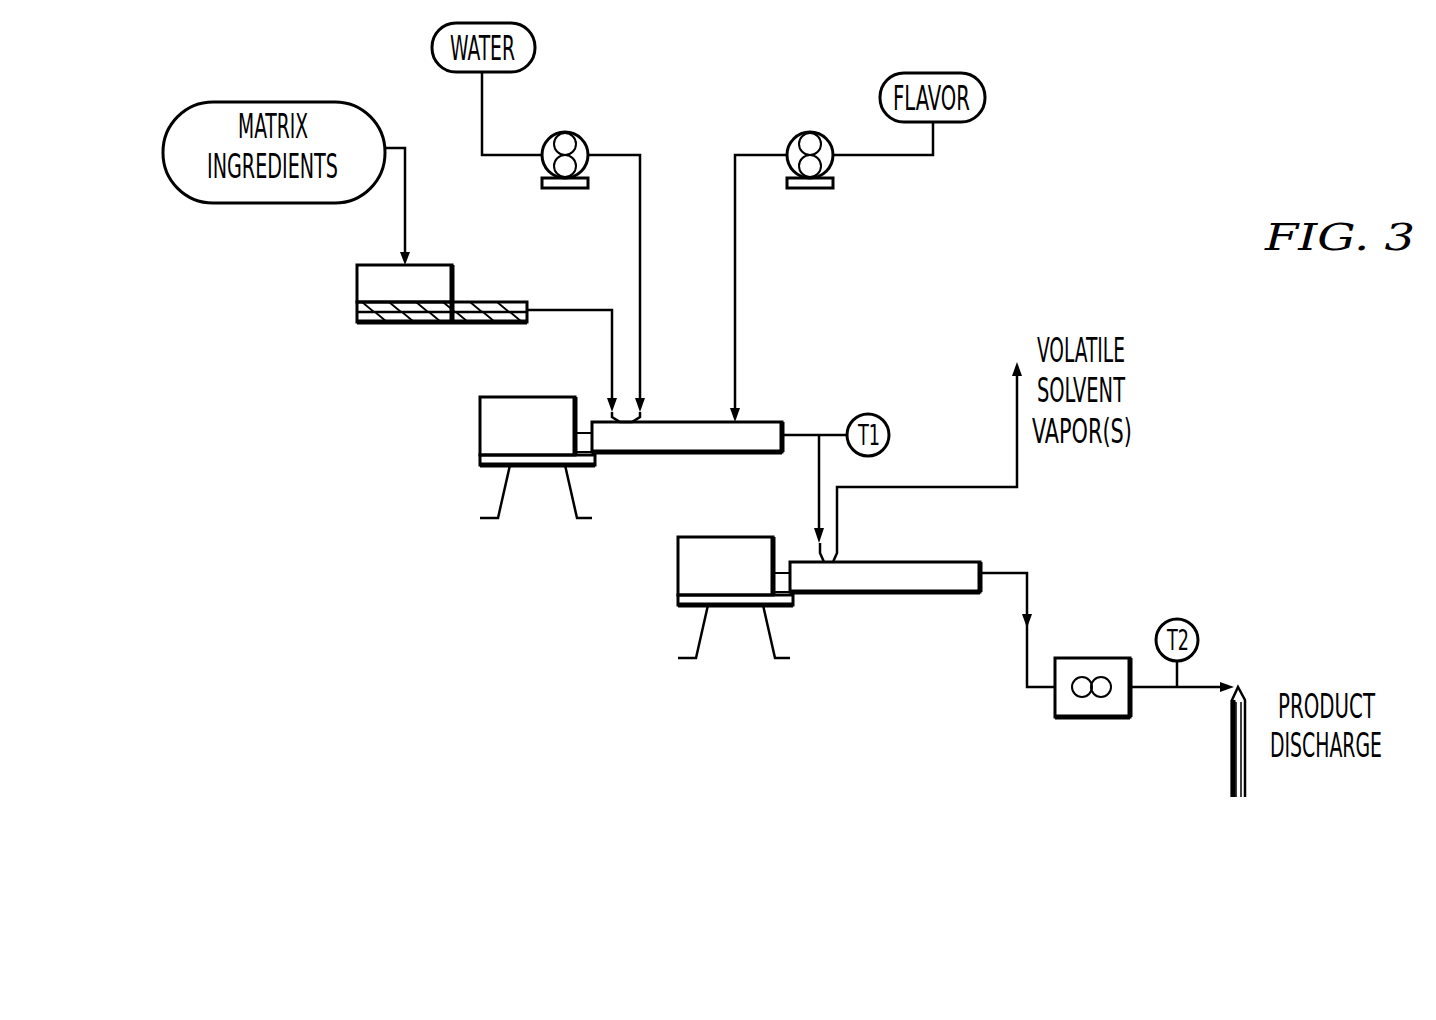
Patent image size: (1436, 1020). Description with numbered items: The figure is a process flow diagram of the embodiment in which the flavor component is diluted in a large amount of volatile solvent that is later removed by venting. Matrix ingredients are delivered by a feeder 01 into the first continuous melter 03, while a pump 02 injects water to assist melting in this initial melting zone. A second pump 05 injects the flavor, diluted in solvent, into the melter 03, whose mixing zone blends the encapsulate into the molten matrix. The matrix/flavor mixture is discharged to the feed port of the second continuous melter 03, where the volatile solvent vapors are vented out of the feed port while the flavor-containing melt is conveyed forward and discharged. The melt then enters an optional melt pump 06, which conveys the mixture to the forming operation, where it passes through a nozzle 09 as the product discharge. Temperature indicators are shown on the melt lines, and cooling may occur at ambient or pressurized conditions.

The feeder 01 is at (487, 338).
The pump 02 is at (564, 207).
The continuous melter 03 is at (726, 596).
The pump 05 is at (807, 207).
The melt pump 06 is at (1092, 751).
The nozzle 09 is at (1253, 687).